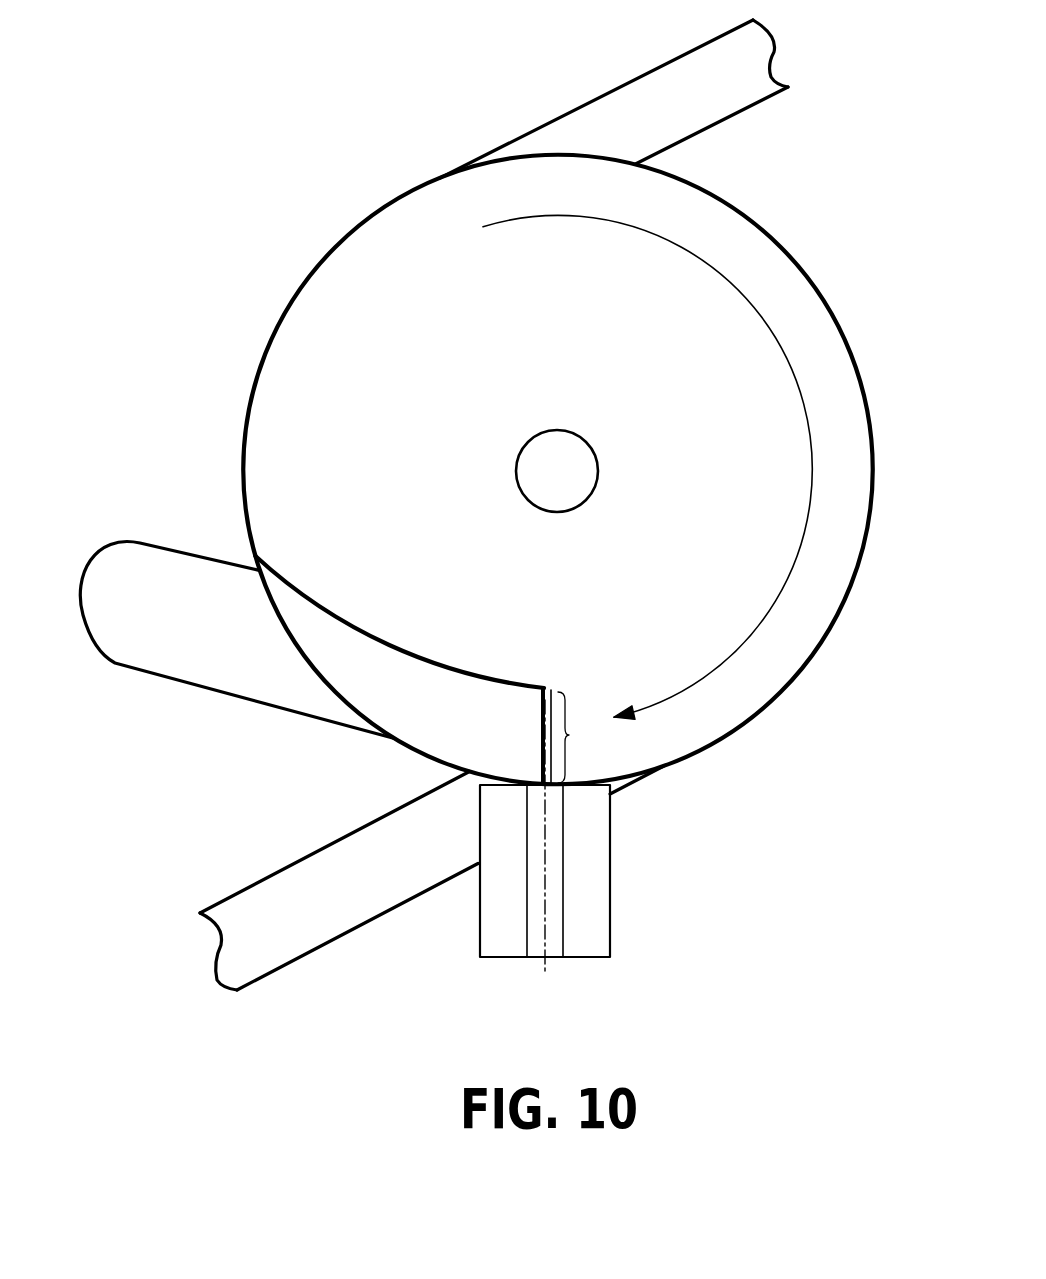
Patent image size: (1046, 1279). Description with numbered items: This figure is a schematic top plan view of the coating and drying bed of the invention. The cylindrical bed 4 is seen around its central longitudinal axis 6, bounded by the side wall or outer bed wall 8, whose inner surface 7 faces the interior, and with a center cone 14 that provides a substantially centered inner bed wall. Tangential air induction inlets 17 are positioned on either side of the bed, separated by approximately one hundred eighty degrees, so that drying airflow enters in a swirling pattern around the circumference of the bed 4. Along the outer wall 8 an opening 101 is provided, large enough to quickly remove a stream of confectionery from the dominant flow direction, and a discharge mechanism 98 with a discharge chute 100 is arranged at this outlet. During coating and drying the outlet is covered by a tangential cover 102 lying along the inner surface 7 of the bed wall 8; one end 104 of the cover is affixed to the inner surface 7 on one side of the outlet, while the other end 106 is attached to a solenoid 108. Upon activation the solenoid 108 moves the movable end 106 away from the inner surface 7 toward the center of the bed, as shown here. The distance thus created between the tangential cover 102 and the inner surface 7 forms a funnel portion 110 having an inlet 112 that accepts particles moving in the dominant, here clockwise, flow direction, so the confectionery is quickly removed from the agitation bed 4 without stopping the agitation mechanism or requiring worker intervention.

The cylindrical bed 4 is at (243, 305).
The central longitudinal axis 6 is at (557, 469).
The inner surface 7 is at (252, 402).
The outer bed wall 8 is at (841, 332).
The center cone 14 is at (513, 460).
The tangential air induction inlets 17 is at (603, 102).
The discharge mechanism 98 is at (655, 900).
The discharge chute 100 is at (110, 642).
The opening 101 is at (312, 658).
The tangential cover 102 is at (508, 683).
The fixed end of tangential cover 104 is at (260, 550).
The movable end of tangential cover 106 is at (548, 688).
The solenoid 108 is at (548, 835).
The funnel portion 110 is at (448, 745).
The inlet of funnel portion 112 is at (570, 735).